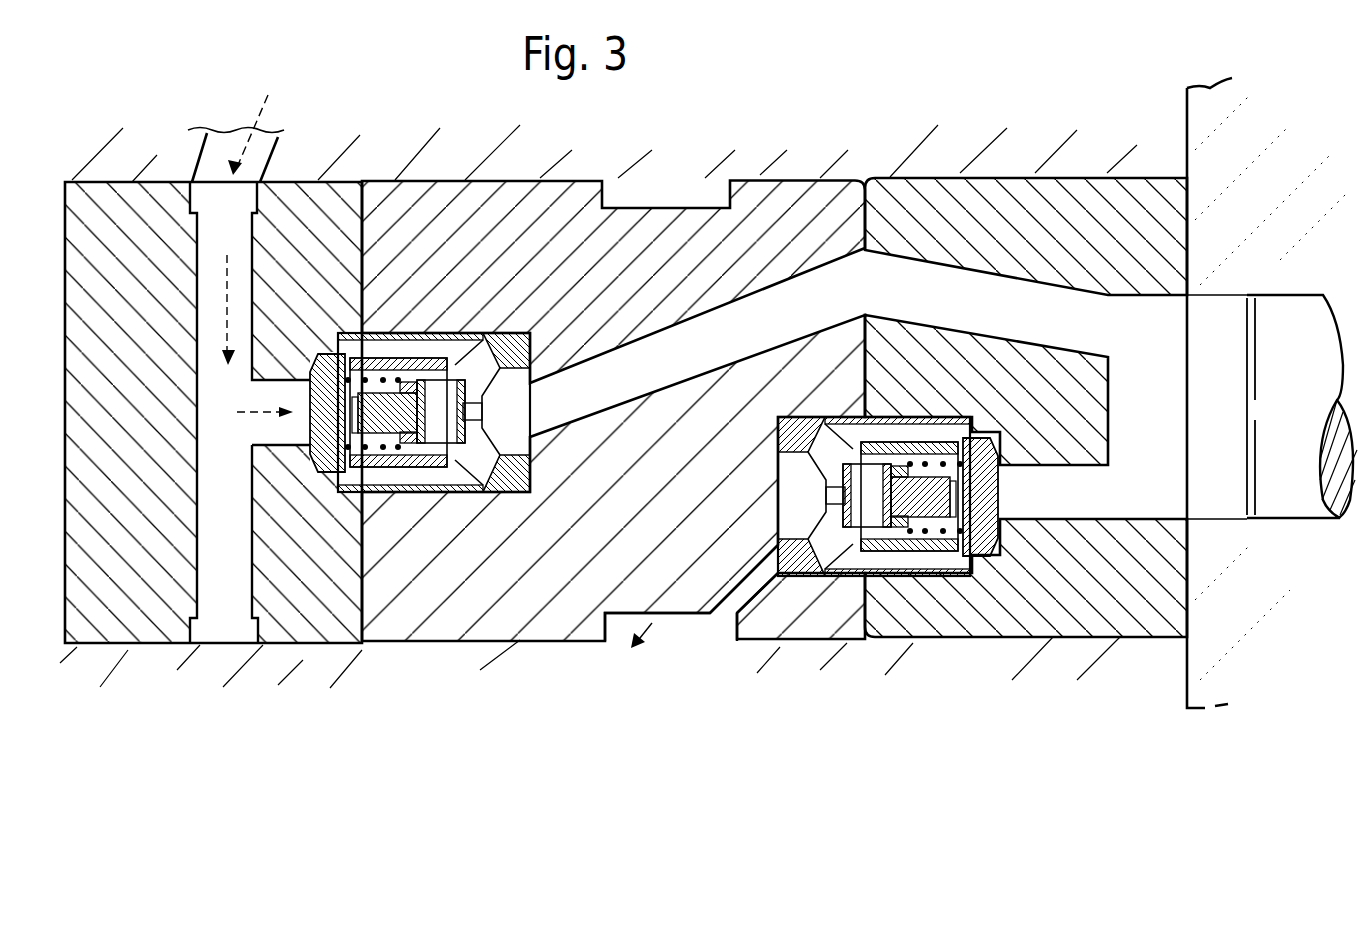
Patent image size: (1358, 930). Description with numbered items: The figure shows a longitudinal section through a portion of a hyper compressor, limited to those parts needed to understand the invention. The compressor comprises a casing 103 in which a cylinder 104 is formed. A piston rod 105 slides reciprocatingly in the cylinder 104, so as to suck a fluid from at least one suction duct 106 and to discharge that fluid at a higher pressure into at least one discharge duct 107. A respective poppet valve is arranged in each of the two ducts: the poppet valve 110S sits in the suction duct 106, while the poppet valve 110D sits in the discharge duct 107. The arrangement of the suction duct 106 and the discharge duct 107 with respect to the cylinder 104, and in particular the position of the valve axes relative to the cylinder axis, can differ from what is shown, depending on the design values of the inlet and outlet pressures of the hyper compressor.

The casing 103 is at (1200, 678).
The cylinder 104 is at (1205, 466).
The piston rod 105 is at (1305, 308).
The suction duct 106 is at (213, 162).
The discharge duct 107 is at (706, 598).
The poppet valve in the suction duct 110S is at (438, 322).
The poppet valve in the discharge duct 110D is at (923, 594).